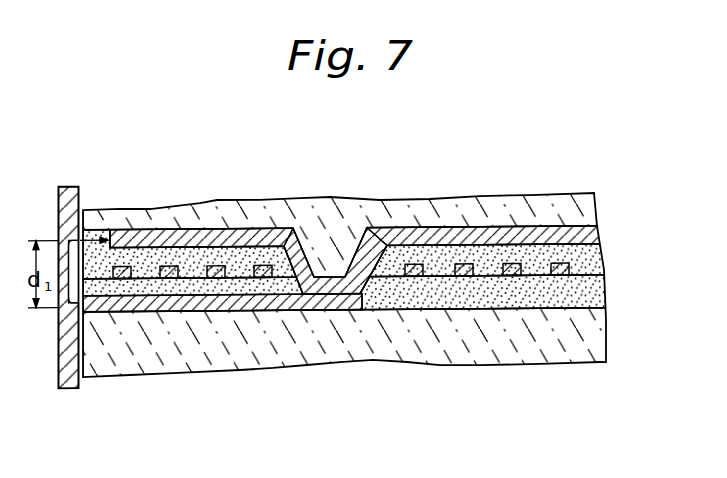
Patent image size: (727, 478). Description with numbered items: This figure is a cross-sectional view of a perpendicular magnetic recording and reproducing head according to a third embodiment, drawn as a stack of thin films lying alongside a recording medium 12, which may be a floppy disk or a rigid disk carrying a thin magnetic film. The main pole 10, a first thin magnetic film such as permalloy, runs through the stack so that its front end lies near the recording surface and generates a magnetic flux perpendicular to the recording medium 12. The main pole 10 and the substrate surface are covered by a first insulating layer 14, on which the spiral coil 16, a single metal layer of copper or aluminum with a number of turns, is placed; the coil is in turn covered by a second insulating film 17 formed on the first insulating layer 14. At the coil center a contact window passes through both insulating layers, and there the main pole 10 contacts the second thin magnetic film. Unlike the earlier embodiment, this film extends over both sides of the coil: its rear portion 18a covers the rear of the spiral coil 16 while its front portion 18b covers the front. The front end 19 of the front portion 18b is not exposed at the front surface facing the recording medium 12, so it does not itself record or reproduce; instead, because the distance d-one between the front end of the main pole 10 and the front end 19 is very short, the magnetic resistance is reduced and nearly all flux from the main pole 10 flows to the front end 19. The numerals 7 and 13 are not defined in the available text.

The heating element 7 is at (262, 260).
The main pole 10 is at (191, 305).
The recording medium 12 is at (63, 388).
The substrate 13 is at (345, 363).
The first insulating layer 14 is at (267, 288).
The spiral coil 16 is at (580, 263).
The second insulating film 17 is at (382, 262).
The rear portion of the second thin magnetic film 18a is at (601, 230).
The front portion of the second thin magnetic film 18b is at (181, 229).
The front end of the front portion of the second thin magnetic film 19 is at (125, 211).